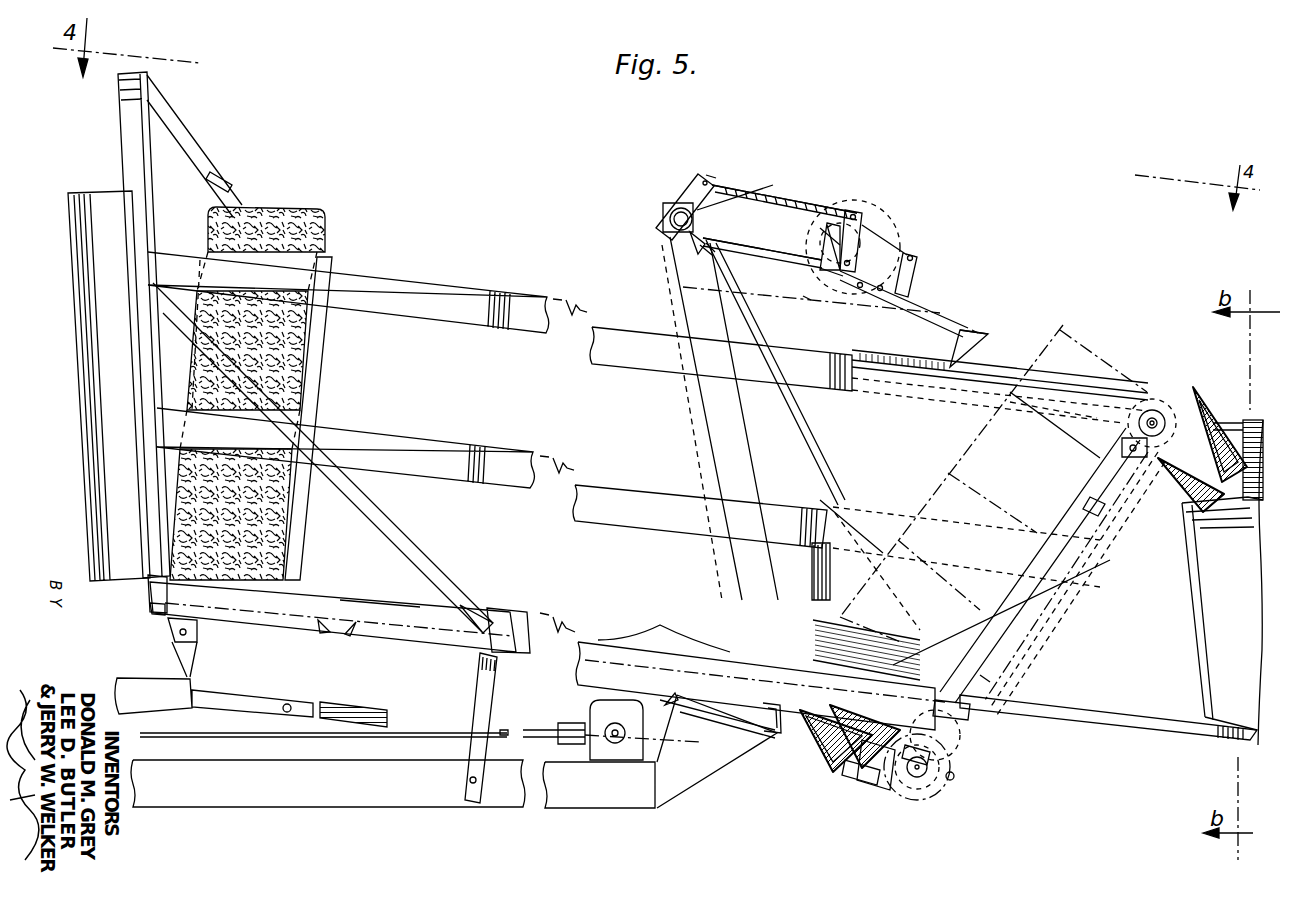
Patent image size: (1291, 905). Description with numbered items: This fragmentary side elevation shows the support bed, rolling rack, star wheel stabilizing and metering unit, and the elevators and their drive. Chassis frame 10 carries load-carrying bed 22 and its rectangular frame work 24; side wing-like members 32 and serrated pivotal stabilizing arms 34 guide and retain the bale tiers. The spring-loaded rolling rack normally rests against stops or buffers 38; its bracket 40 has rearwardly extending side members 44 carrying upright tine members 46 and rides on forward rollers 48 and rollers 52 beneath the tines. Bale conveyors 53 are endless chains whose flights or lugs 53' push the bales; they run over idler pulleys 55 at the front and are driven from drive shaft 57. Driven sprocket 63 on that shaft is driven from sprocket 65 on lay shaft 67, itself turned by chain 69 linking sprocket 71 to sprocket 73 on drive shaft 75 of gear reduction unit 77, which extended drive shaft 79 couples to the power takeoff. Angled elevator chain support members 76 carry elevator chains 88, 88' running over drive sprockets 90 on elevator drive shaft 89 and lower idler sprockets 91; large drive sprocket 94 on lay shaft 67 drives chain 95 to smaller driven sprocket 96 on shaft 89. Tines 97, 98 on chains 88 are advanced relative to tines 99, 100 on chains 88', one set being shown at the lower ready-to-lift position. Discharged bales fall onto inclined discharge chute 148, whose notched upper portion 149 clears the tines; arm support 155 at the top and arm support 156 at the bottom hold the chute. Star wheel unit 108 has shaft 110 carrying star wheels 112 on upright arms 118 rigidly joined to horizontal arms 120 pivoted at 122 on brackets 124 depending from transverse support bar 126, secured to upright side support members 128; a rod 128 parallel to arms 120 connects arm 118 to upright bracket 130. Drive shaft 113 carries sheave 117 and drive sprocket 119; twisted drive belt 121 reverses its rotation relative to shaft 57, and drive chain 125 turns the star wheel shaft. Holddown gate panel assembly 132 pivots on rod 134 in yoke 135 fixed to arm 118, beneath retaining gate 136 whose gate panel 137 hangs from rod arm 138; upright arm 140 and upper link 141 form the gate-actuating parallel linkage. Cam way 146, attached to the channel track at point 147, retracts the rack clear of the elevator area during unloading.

The chassis frame 10 is at (263, 808).
The load-carrying bed 22 is at (354, 636).
The rectangular frame work 24 is at (366, 636).
The side wing-like members 32 is at (80, 300).
The pivotal stabilizing arms 34 is at (212, 162).
The stops or buffers 38 is at (145, 604).
The rectilinear frame or bracket 40 is at (240, 625).
The side members 44 is at (262, 640).
The tine member 46 is at (325, 351).
The rollers 48 is at (205, 620).
The antifriction rollers 52 is at (296, 619).
The bale conveyors 53 is at (470, 724).
The flights or lugs 53' is at (566, 637).
The idler pulleys 55 is at (155, 617).
The drive shaft 57 is at (980, 720).
The driven sprocket 63 is at (946, 740).
The driven sprocket 65 is at (962, 760).
The lay shaft 67 is at (955, 778).
The chain 69 is at (842, 776).
The sprocket 71 is at (912, 800).
The sprocket 73 is at (615, 761).
The drive shaft 75 is at (626, 688).
The elevator chain support members 76 is at (1085, 492).
The gear reduction unit 77 is at (590, 710).
The extended drive shaft 79 is at (492, 732).
The elevator conveyor chains 88 is at (1075, 580).
The elevator conveyor chains 88' is at (1081, 588).
The elevator drive shaft 89 is at (1140, 418).
The drive sprockets 90 is at (1155, 405).
The idler sprockets 91 is at (985, 678).
The large drive sprocket 94 is at (940, 795).
The driven chain 95 is at (1045, 630).
The driven sprocket 96 is at (1170, 420).
The tines 97 is at (1190, 480).
The tines 98 is at (1200, 505).
The tines 99 is at (1198, 395).
The tines 100 is at (1220, 404).
The stabilizing and metering star wheel unit 108 is at (839, 199).
The shaft 110 is at (861, 245).
The star wheels 112 is at (900, 223).
The drive shaft 113 is at (712, 203).
The sheave 117 is at (754, 192).
The upright arms 118 is at (860, 213).
The drive sprocket 119 is at (717, 249).
The horizontally extended arms 120 is at (762, 257).
The drive belt 121 is at (798, 427).
The pivot 122 is at (700, 247).
The brackets 124 is at (688, 236).
The drive chain 125 is at (785, 230).
The transverse support bar 126 is at (668, 220).
The upright side support members 128 is at (703, 402).
The upright rigid bracket 130 is at (698, 182).
The holddown gate panel assembly 132 is at (922, 315).
The rod 134 is at (850, 306).
The yoke 135 is at (807, 298).
The retaining gate 136 is at (995, 336).
The gate panel 137 is at (982, 347).
The pipe or rod arm 138 is at (975, 330).
The upright arm 140 is at (813, 236).
The upper link 141 is at (915, 255).
The cam way 146 is at (862, 781).
The attachment point 147 is at (776, 702).
The inclined discharge chute 148 is at (1195, 632).
The notched out upper portion 149 is at (1243, 518).
The arm support 155 is at (1250, 420).
The arm support 156 is at (1125, 728).